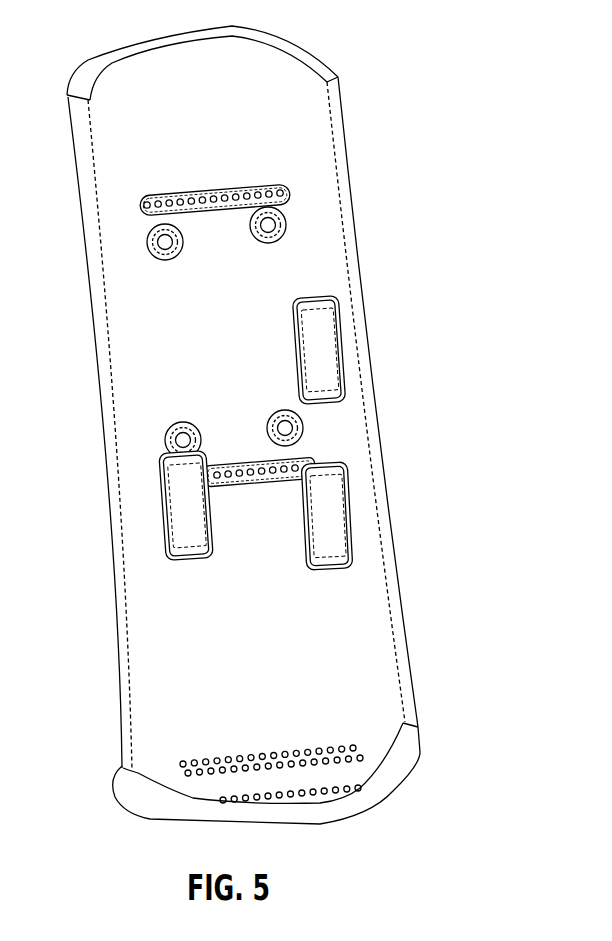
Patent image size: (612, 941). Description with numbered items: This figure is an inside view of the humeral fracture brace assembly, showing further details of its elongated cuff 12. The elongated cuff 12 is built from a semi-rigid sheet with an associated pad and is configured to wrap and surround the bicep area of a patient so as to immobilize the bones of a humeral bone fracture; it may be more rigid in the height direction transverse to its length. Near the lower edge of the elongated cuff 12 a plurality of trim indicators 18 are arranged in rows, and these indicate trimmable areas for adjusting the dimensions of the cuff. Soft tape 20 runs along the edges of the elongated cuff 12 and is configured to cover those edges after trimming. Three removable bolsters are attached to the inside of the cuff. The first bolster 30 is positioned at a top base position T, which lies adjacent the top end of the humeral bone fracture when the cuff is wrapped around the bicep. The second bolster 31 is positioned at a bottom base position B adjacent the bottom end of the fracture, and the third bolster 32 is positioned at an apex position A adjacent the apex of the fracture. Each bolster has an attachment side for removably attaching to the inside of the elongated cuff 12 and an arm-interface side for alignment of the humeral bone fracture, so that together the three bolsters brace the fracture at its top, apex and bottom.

The elongated cuff 12 is at (325, 225).
The trim indicators 18 is at (227, 737).
The soft tape 20 is at (413, 743).
The first bolster 30 is at (328, 347).
The second bolster 31 is at (341, 510).
The third bolster 32 is at (163, 523).
The top base position T is at (352, 368).
The apex position A is at (155, 502).
The bottom base position B is at (357, 520).